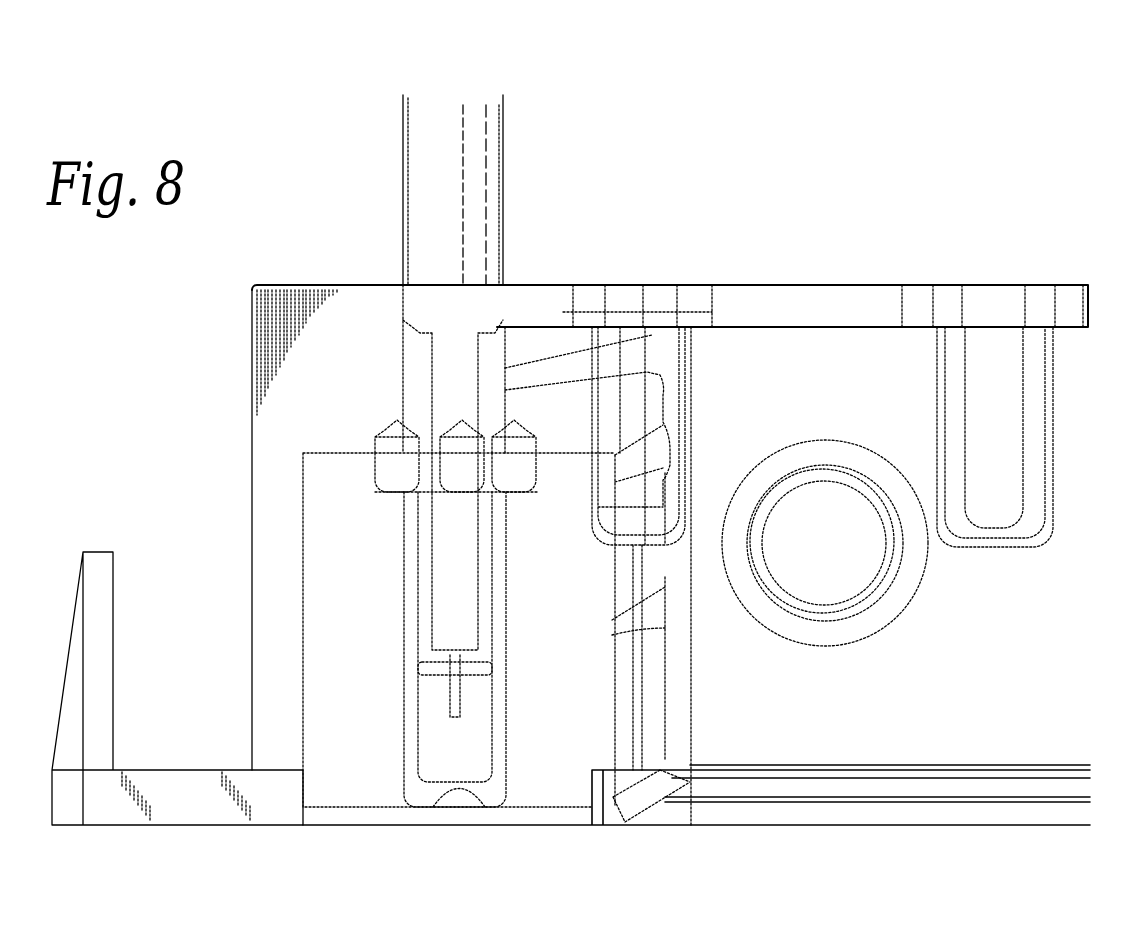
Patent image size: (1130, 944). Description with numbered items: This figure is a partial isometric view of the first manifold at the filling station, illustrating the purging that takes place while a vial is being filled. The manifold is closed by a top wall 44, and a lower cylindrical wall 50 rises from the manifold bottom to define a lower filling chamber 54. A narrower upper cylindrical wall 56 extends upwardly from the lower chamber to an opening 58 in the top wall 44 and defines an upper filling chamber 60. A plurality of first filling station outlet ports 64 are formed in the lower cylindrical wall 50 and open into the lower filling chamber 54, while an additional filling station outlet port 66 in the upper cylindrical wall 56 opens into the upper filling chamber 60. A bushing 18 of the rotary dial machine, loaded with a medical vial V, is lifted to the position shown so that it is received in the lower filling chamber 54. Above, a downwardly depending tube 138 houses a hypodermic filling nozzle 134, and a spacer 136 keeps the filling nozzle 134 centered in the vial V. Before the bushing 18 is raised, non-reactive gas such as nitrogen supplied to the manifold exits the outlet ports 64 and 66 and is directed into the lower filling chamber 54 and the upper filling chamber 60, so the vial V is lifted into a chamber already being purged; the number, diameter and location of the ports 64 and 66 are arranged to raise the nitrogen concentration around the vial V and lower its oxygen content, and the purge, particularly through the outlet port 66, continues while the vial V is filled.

The tube 138 is at (503, 143).
The upper filling chamber 60 is at (412, 345).
The opening 58 is at (503, 285).
The additional filling station outlet port 66 is at (543, 372).
The top wall 44 is at (815, 285).
The upper cylindrical wall 56 is at (405, 392).
The first filling station outlet ports 64 is at (613, 628).
The spacer 136 is at (432, 667).
The hypodermic filling nozzle 134 is at (450, 700).
The lower filling chamber 54 is at (360, 750).
The bushing 18 is at (382, 820).
The medical vial V is at (487, 797).
The lower cylindrical wall 50 is at (625, 688).